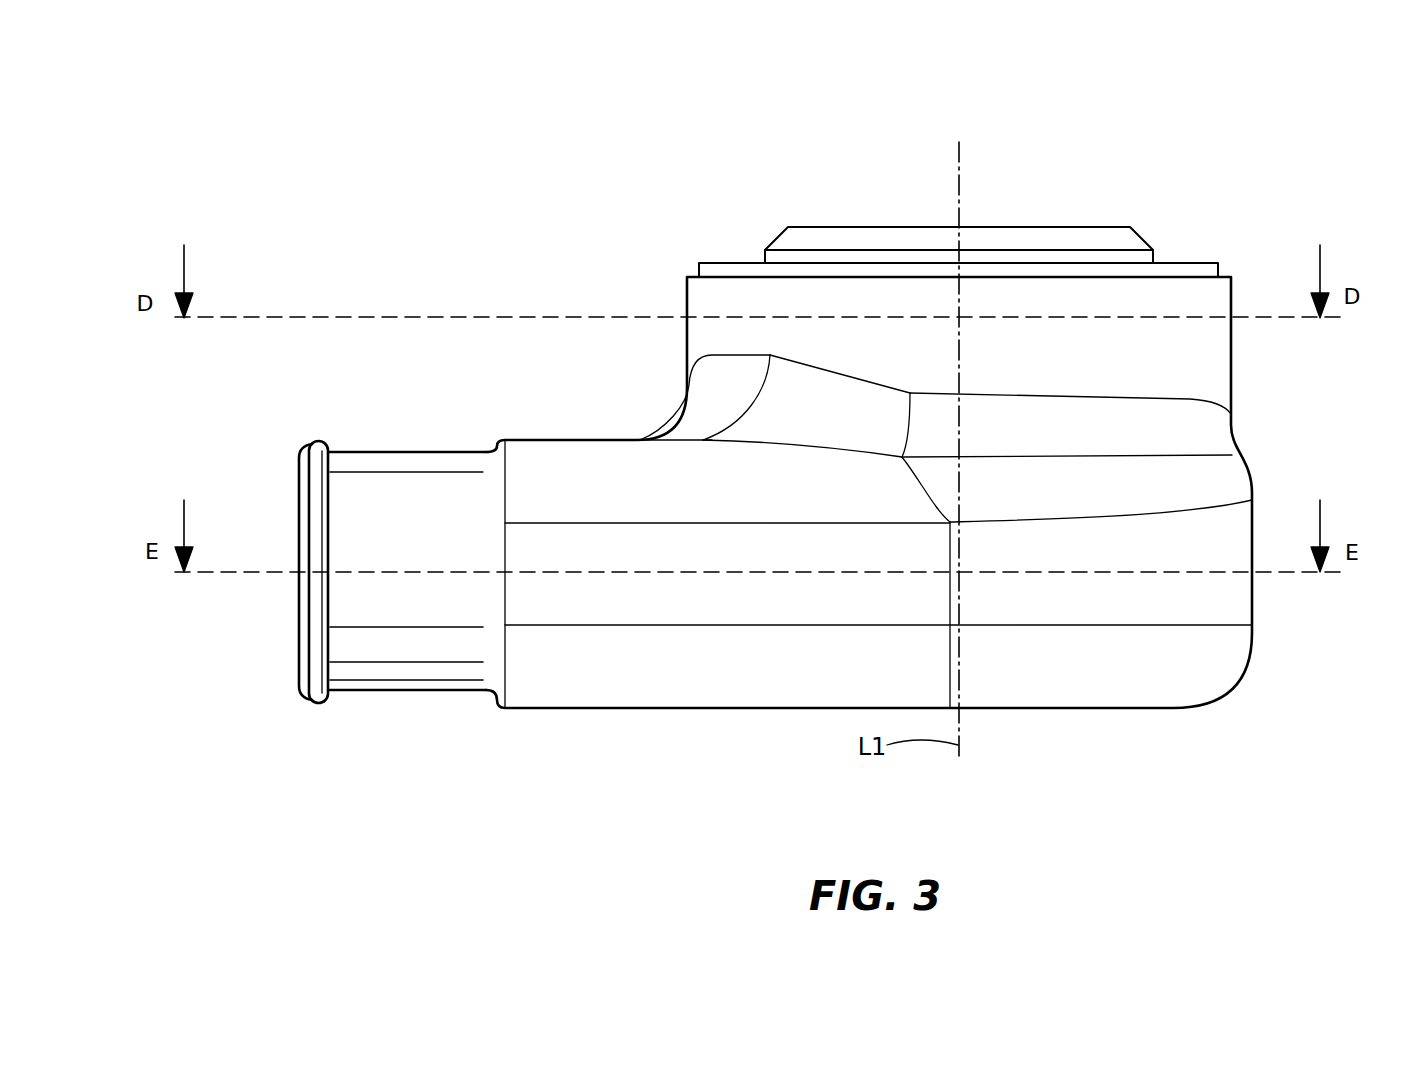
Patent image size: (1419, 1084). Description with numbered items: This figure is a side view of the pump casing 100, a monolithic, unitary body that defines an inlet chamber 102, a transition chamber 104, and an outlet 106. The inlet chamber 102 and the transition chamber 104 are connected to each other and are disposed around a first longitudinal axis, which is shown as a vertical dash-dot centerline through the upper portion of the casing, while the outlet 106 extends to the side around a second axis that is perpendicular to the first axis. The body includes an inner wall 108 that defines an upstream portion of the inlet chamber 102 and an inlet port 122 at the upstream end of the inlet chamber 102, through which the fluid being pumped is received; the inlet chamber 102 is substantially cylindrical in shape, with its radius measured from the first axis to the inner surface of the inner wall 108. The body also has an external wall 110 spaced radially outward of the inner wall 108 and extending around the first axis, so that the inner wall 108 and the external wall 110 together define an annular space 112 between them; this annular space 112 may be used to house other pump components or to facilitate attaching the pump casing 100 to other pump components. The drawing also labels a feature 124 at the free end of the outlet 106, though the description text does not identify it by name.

The pump casing 100 is at (438, 145).
The inlet chamber 102 is at (1197, 362).
The transition chamber 104 is at (1240, 595).
The outlet 106 is at (413, 690).
The inner wall 108 is at (788, 227).
The external wall 110 is at (689, 275).
The annular space 112 is at (1190, 263).
The inlet port 122 is at (1068, 228).
The end flange 124 is at (298, 632).